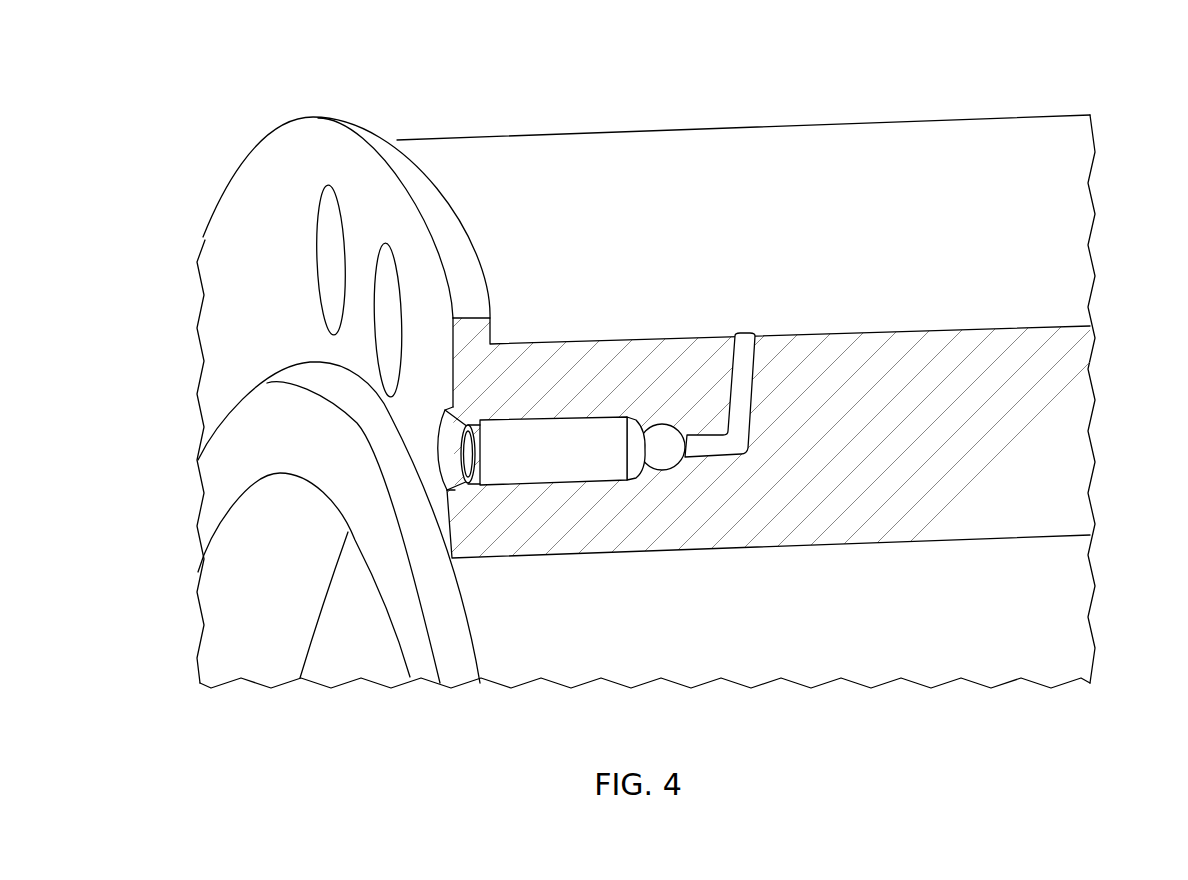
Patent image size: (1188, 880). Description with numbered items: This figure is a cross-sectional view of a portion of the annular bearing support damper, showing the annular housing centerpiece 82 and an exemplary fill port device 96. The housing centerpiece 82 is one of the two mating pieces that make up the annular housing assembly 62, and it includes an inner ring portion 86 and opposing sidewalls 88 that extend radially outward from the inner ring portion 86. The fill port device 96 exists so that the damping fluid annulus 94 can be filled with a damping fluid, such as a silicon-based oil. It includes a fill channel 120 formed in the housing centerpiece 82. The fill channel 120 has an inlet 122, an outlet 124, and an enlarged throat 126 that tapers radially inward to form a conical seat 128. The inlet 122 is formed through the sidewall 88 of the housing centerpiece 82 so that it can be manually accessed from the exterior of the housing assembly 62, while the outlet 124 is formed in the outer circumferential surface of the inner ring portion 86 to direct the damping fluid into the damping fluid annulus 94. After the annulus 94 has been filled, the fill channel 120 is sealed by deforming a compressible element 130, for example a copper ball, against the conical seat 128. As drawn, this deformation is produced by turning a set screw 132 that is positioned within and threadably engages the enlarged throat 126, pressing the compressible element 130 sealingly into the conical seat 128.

The annular housing assembly 62 is at (237, 131).
The annular housing centerpiece 82 is at (1102, 335).
The inner ring portion 86 is at (937, 448).
The sidewall 88 is at (207, 242).
The damping fluid annulus 94 is at (762, 208).
The fill port device 96 is at (611, 370).
The fill channel 120 is at (749, 406).
The inlet 122 is at (440, 438).
The outlet 124 is at (745, 333).
The enlarged throat 126 is at (493, 491).
The conical seat 128 is at (685, 457).
The compressible element 130 is at (661, 426).
The set screw 132 is at (525, 422).